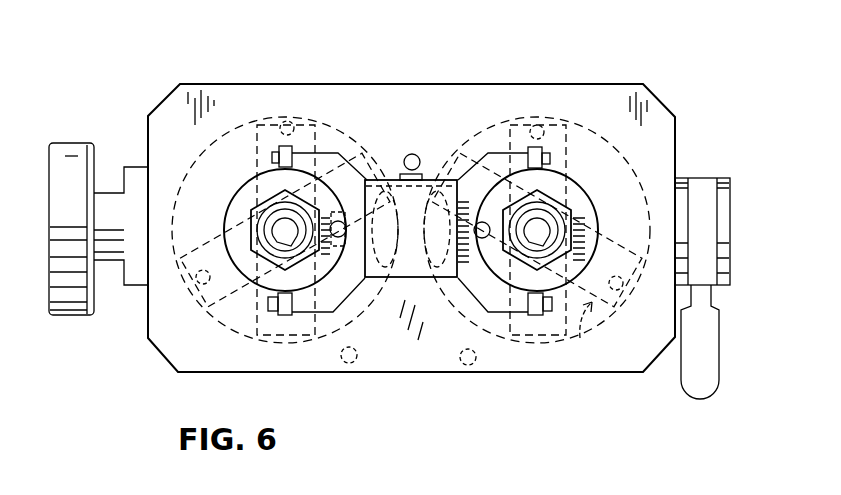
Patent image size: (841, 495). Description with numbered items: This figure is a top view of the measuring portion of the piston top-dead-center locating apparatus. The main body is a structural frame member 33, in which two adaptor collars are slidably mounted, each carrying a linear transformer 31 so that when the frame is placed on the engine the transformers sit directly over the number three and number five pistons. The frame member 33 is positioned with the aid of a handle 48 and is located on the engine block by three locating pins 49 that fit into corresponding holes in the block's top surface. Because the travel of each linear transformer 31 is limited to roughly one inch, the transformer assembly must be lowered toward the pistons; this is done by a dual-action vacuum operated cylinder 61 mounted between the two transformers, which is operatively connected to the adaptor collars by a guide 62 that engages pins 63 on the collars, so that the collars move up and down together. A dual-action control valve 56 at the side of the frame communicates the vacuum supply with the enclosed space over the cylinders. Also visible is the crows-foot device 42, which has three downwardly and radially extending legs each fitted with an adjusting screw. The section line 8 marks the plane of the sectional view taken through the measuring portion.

The section line 8- 8 is at (288, 112).
The linear transformer 31 is at (548, 212).
The structural frame member 33 is at (470, 84).
The crows-foot device 42 is at (597, 335).
The handle 48 is at (70, 143).
The locating pin 49 is at (418, 156).
The dual-action control valve 56 is at (730, 216).
The dual-action vacuum operated cylinder 61 is at (388, 180).
The guide 62 is at (350, 152).
The pin 63 is at (283, 317).